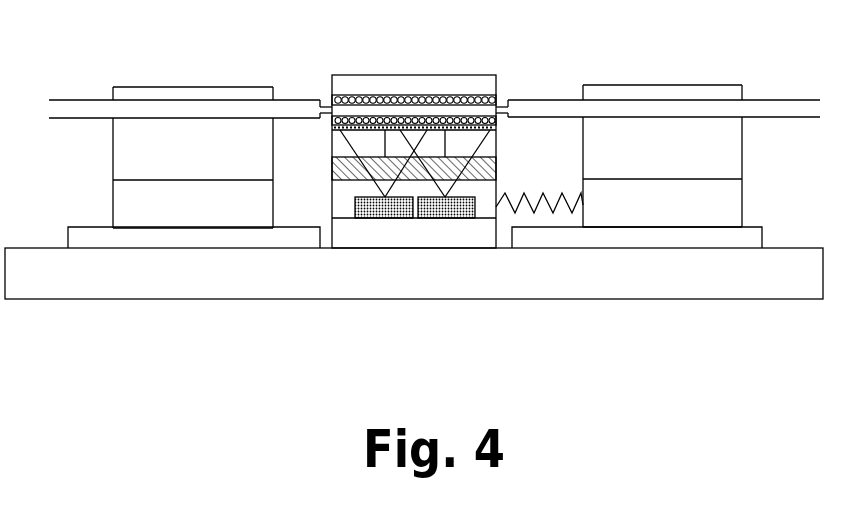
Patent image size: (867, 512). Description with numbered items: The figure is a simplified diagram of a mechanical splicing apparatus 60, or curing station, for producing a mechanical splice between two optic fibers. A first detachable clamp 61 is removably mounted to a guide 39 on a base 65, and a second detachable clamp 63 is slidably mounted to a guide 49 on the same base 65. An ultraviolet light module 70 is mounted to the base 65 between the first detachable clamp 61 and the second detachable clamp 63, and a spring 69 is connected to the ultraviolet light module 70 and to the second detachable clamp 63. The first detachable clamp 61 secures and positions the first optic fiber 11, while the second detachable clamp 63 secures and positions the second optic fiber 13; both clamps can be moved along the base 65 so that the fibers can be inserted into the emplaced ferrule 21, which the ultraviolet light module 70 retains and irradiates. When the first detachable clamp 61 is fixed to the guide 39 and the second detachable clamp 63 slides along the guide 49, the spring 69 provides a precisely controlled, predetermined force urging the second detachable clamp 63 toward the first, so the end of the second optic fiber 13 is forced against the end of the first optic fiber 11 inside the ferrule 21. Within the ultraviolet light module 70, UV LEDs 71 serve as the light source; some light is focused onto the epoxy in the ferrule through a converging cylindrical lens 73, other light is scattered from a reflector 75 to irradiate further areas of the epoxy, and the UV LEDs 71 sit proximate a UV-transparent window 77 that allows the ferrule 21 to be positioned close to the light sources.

The first optic fiber 11 is at (96, 108).
The second optic fiber 13 is at (770, 105).
The ferrule 21 is at (373, 98).
The guide 39 is at (104, 237).
The guide 49 is at (686, 238).
The mechanical splicing apparatus 60 is at (266, 339).
The first detachable clamp 61 is at (220, 145).
The second detachable clamp 63 is at (707, 135).
The base 65 is at (253, 279).
The spring 69 is at (519, 203).
The ultraviolet light module 70 is at (436, 255).
The UV LEDs 71 is at (436, 219).
The converging cylindrical lens 73 is at (478, 180).
The reflector 75 is at (420, 87).
The UV-transparent window 77 is at (478, 122).